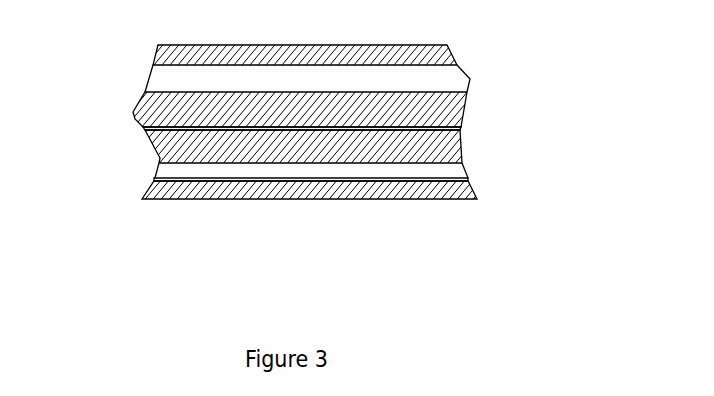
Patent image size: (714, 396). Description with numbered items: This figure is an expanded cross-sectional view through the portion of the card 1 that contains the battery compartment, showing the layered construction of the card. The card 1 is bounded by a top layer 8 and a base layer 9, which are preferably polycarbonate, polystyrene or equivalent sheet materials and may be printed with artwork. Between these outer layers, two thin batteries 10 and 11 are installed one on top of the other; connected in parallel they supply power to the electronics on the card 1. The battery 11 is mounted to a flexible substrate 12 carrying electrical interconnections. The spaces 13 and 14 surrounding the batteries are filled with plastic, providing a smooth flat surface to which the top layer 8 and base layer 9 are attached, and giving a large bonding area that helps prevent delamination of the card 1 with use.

The card 1 is at (165, 225).
The top layer 8 is at (423, 52).
The base layer 9 is at (345, 188).
The battery 10 is at (447, 108).
The battery 11 is at (178, 148).
The flexible substrate 12 is at (442, 172).
The space 13 is at (146, 128).
The space 14 is at (442, 78).